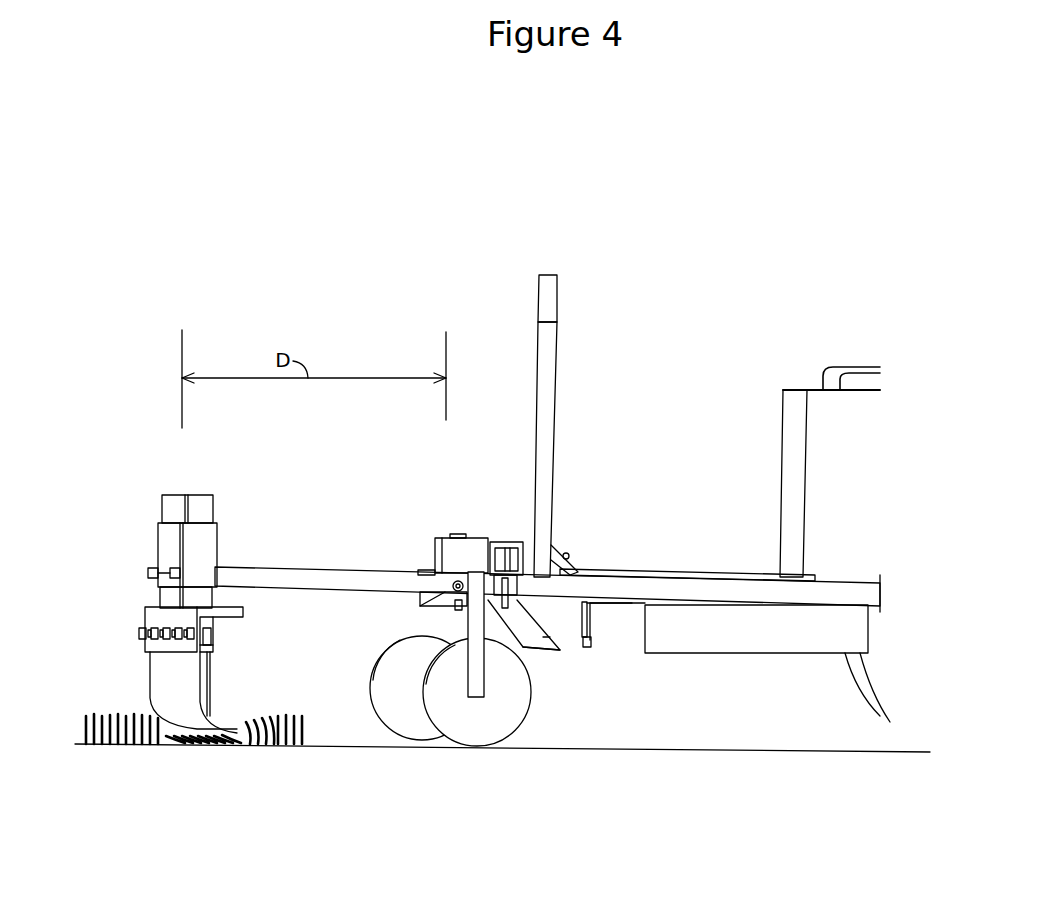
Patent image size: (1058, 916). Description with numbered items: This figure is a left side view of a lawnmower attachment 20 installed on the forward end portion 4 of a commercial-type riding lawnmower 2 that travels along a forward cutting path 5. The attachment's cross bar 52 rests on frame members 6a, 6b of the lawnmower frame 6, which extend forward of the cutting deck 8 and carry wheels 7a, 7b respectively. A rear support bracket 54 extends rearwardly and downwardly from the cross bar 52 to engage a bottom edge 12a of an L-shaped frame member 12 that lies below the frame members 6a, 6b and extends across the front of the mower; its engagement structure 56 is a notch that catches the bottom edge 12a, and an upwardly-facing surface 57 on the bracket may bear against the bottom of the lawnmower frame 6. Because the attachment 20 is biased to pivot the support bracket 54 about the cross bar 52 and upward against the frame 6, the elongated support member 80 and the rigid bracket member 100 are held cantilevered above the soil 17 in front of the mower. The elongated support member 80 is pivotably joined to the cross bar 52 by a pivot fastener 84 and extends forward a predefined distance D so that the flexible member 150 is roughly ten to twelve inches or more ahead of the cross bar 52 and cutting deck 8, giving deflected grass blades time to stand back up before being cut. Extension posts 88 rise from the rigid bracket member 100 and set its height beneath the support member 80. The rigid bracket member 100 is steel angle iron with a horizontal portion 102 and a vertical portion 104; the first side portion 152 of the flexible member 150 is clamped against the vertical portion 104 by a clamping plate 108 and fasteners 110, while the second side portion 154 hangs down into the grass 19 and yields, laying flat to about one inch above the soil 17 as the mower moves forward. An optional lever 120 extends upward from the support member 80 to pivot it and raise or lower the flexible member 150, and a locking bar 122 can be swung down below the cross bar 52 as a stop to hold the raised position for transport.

The lawnmower 2 is at (800, 389).
The forward end portion 4 is at (611, 474).
The forward cutting path 5 is at (130, 566).
The lawnmower frame 6 is at (803, 590).
The frame member 6a is at (427, 567).
The frame member 6b is at (540, 588).
The wheel 7a is at (387, 698).
The wheel 7b is at (468, 728).
The cutting deck 8 is at (752, 634).
The frame member 12 is at (620, 596).
The bottom edge 12a is at (595, 620).
The soil 17 is at (345, 748).
The grass 19 is at (90, 735).
The attachment 20 is at (158, 519).
The cross bar 52 is at (458, 553).
The rear support bracket 54 is at (532, 642).
The engagement structure 56 is at (568, 638).
The upwardly-facing surface 57 is at (595, 632).
The elongated support member 80 is at (279, 578).
The pivot fastener 84 is at (455, 590).
The extension post 88 is at (204, 512).
The rigid bracket member 100 is at (145, 618).
The horizontal portion 102 is at (229, 617).
The vertical portion 104 is at (207, 648).
The clamping plate 108 is at (212, 637).
The fasteners 110 is at (140, 632).
The lever 120 is at (545, 383).
The locking bar 122 is at (560, 557).
The flexible member 150 is at (205, 687).
The first side portion 152 is at (205, 623).
The second side portion 154 is at (229, 730).